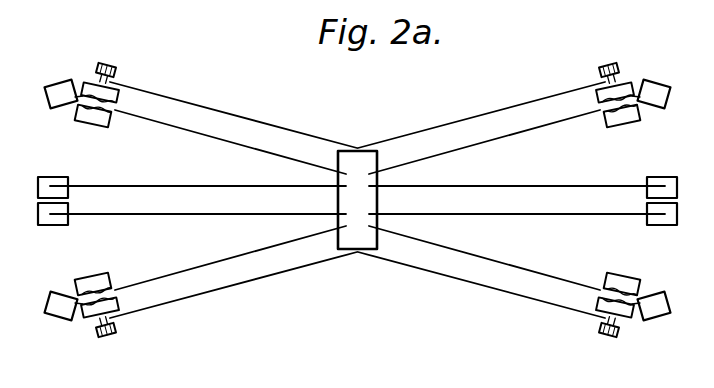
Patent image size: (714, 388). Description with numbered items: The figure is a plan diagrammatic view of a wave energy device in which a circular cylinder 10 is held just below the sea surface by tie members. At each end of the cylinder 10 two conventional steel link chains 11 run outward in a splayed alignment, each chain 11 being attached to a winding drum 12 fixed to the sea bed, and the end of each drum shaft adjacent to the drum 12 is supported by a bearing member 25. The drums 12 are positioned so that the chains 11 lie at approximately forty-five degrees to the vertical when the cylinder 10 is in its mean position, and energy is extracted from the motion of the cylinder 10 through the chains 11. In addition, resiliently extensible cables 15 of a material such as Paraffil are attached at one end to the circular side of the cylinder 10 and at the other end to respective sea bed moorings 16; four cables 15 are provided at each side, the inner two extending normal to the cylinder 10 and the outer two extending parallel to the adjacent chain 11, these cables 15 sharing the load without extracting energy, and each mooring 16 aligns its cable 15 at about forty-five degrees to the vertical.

The circular cylinder 10 is at (365, 202).
The steel link chain 11 is at (286, 128).
The winding drum 12 is at (115, 68).
The resiliently extensible cable 15 is at (162, 184).
The sea bed mooring 16 is at (60, 104).
The bearing member 25 is at (613, 66).